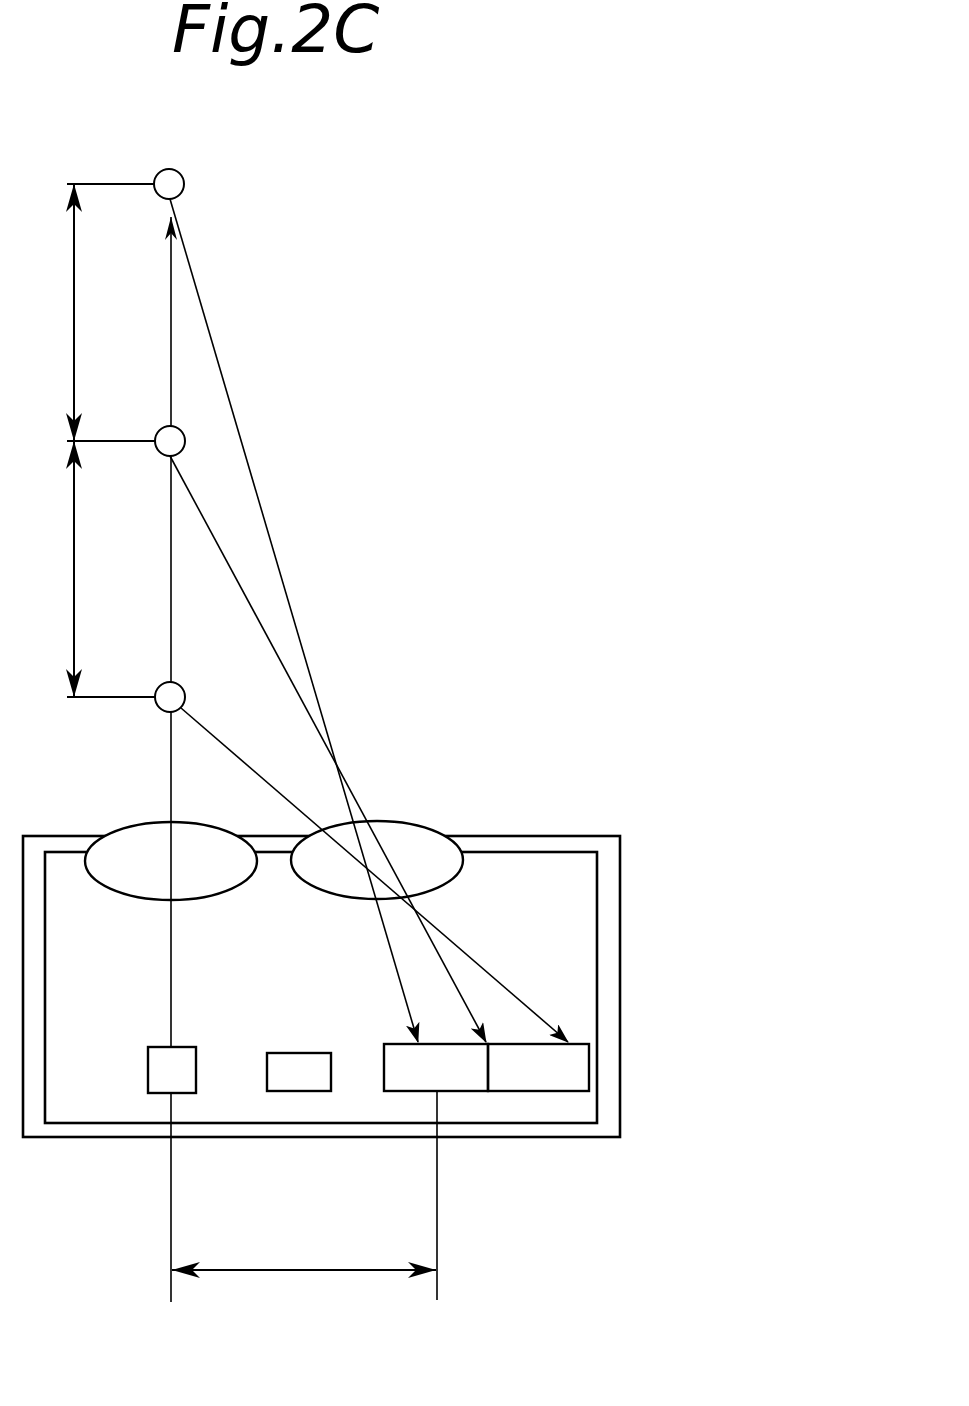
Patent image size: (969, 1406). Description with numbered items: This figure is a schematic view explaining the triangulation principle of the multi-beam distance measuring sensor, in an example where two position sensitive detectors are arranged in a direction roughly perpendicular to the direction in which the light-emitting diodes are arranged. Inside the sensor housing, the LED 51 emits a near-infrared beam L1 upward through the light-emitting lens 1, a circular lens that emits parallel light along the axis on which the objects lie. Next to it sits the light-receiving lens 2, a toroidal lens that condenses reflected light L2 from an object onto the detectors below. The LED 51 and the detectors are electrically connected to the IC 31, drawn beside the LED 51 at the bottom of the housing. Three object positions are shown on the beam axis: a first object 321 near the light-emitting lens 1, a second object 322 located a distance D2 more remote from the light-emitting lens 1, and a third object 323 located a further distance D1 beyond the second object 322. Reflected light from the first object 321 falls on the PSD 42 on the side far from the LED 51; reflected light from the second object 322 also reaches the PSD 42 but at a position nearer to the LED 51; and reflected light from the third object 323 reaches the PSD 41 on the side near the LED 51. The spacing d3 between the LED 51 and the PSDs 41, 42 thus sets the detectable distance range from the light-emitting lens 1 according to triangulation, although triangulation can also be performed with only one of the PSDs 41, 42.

The light-emitting lens 1 is at (205, 843).
The light-receiving lens 2 is at (413, 843).
The IC 31 is at (277, 1075).
The PSD 41 is at (410, 1093).
The PSD 42 is at (520, 1093).
The LED 51 is at (163, 1078).
The first object to be detected 321 is at (160, 708).
The second object to be detected 322 is at (160, 452).
The third object to be detected 323 is at (180, 171).
The near-infrared beam L1 is at (165, 792).
The reflected light L2 is at (285, 515).
The distance D1 is at (87, 312).
The distance D2 is at (87, 569).
The distance d3 between emitter and PSD d3 is at (304, 1205).